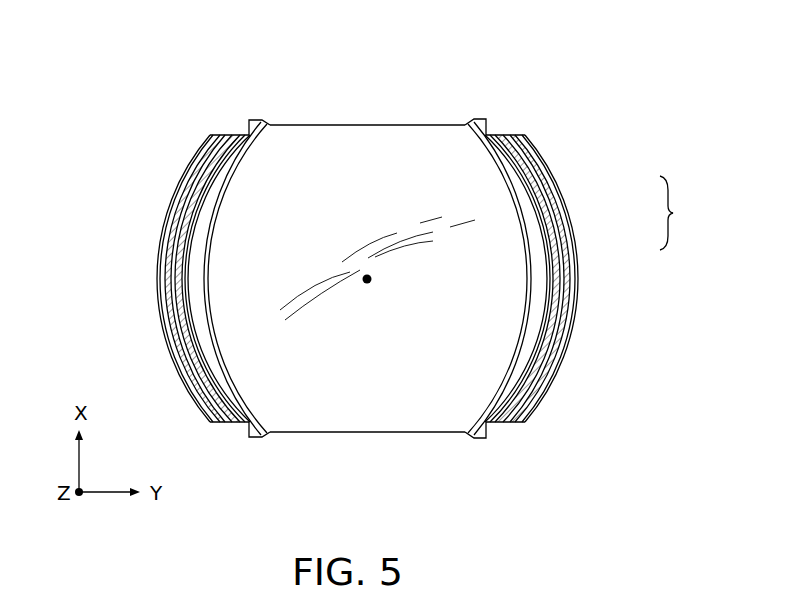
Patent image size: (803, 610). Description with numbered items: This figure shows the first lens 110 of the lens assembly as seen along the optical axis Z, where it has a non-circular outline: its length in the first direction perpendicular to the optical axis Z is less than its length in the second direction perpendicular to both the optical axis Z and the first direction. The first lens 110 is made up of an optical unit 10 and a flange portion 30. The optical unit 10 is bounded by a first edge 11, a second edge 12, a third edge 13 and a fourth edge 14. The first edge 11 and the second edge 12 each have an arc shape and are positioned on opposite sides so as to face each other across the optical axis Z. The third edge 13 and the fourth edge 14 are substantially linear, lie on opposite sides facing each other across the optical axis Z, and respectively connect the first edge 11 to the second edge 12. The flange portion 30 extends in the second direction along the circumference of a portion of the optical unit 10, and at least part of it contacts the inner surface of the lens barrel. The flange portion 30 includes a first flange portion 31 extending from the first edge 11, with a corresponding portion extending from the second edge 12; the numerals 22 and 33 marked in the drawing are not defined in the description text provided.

The first lens 110 is at (328, 20).
The optical unit 10 is at (301, 433).
The first edge 11 is at (212, 315).
The second edge 12 is at (547, 312).
The third edge 13 is at (364, 433).
The fourth edge 14 is at (366, 124).
The outer ring 22 is at (580, 275).
The flange portion 30 is at (435, 278).
The first flange portion 31 is at (212, 200).
The second lens 33 is at (538, 232).
The optical axis Z is at (371, 279).